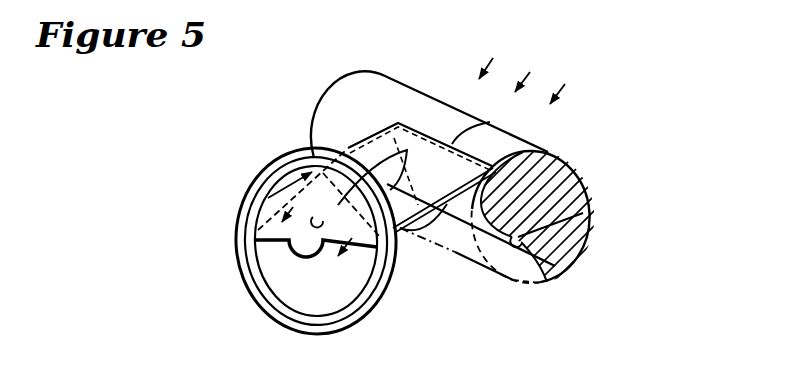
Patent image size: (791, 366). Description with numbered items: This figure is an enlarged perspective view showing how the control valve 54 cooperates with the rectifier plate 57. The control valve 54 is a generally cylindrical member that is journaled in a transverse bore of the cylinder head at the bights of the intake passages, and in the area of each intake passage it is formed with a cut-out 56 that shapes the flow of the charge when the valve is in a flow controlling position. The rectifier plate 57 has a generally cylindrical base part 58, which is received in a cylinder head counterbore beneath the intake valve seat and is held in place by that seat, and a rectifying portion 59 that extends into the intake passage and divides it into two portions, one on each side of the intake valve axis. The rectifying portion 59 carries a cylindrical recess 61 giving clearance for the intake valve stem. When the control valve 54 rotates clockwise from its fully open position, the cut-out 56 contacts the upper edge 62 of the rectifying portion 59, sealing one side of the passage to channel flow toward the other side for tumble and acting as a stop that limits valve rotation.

The control valve 54 is at (589, 181).
The cut-out 56 is at (583, 213).
The rectifier plate 57 is at (232, 218).
The cylindrical base part 58 is at (263, 300).
The rectifying portion 59 is at (348, 148).
The cylindrical recess 61 is at (318, 216).
The upper edge 62 is at (482, 123).